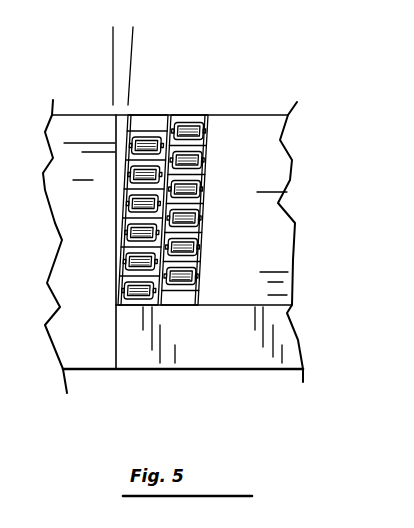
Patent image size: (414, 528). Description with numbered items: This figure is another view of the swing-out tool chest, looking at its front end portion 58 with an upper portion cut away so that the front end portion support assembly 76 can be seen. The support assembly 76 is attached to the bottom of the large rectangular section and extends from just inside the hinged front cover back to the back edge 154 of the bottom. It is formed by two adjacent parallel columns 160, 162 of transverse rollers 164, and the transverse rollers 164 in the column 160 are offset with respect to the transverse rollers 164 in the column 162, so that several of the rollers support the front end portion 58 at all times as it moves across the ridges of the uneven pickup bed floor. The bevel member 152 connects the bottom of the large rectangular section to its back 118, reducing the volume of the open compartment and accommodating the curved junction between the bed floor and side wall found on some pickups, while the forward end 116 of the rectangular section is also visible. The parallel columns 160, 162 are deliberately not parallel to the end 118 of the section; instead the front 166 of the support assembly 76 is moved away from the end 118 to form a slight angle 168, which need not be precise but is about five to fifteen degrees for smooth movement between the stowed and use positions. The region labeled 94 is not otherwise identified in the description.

The front end portion 58 is at (133, 380).
The front end portion support assembly 76 is at (257, 122).
The side wall 94 is at (68, 236).
The forward end 116 is at (115, 297).
The back 118 is at (113, 124).
The bevel member 152 is at (204, 334).
The back edge 154 is at (137, 307).
The column 160 is at (156, 102).
The column 162 is at (198, 105).
The transverse rollers 164 is at (130, 177).
The front 166 is at (214, 120).
The angle 168 is at (178, 45).